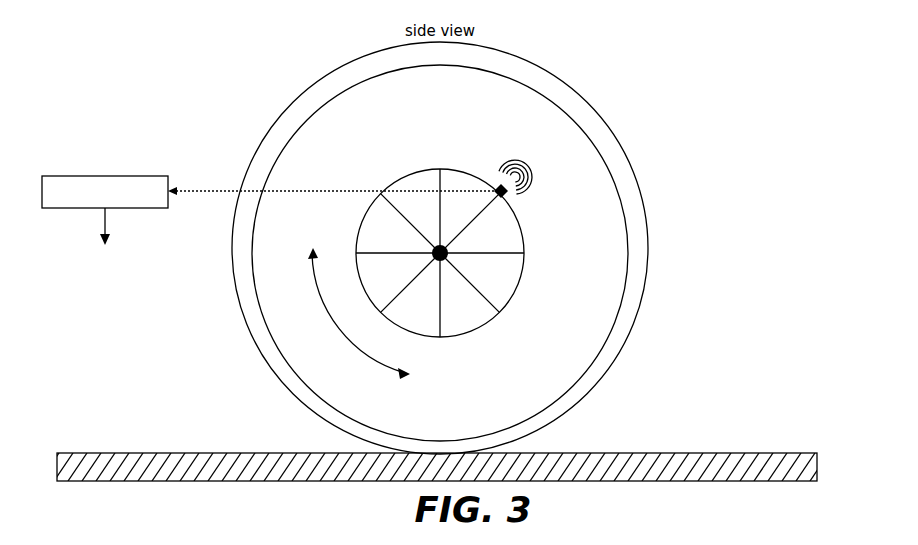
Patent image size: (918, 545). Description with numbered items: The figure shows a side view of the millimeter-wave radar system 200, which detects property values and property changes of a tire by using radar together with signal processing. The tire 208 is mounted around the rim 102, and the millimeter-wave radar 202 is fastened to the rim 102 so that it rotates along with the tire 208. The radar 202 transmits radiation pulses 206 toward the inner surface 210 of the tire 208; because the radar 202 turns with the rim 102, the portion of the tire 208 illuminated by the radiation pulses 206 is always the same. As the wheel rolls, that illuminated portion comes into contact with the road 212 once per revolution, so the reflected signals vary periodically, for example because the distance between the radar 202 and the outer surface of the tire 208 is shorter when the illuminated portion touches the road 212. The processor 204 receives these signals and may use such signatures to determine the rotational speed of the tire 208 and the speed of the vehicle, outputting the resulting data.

The millimeter-wave radar system 200 is at (206, 74).
The rim 102 is at (522, 276).
The millimeter-wave radar 202 is at (506, 196).
The processor 204 is at (112, 176).
The radiation pulses 206 is at (514, 154).
The tire 208 is at (612, 125).
The inner surface 210 is at (302, 120).
The road 212 is at (730, 453).